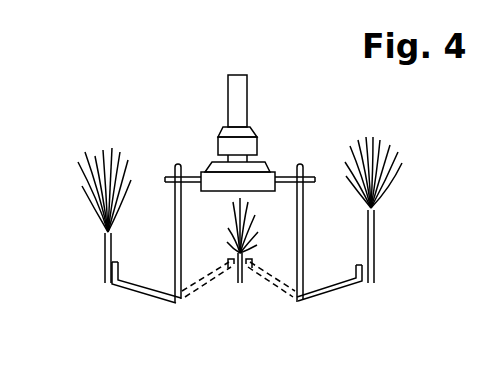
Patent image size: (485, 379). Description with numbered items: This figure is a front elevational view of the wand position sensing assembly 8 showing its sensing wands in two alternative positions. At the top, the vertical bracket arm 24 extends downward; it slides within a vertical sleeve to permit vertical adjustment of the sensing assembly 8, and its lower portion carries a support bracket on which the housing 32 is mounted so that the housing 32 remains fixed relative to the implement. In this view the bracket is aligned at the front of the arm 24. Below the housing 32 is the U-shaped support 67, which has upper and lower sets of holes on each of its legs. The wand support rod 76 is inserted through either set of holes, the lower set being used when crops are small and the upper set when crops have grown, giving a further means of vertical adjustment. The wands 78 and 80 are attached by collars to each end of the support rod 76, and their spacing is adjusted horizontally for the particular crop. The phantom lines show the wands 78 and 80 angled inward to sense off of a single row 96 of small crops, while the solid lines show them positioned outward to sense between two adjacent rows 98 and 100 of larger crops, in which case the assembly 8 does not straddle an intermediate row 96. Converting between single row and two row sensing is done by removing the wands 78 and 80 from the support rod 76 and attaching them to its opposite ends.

The wand position sensing assembly 8 is at (262, 121).
The vertical bracket arm 24 is at (228, 97).
The housing 32 is at (218, 143).
The U-shaped support 67 is at (208, 170).
The wand support rod 76 is at (290, 174).
The wand 78 is at (133, 289).
The wand 80 is at (191, 303).
The row of crops 96 is at (250, 237).
The row of crops 98 is at (375, 219).
The row of crops 100 is at (107, 238).